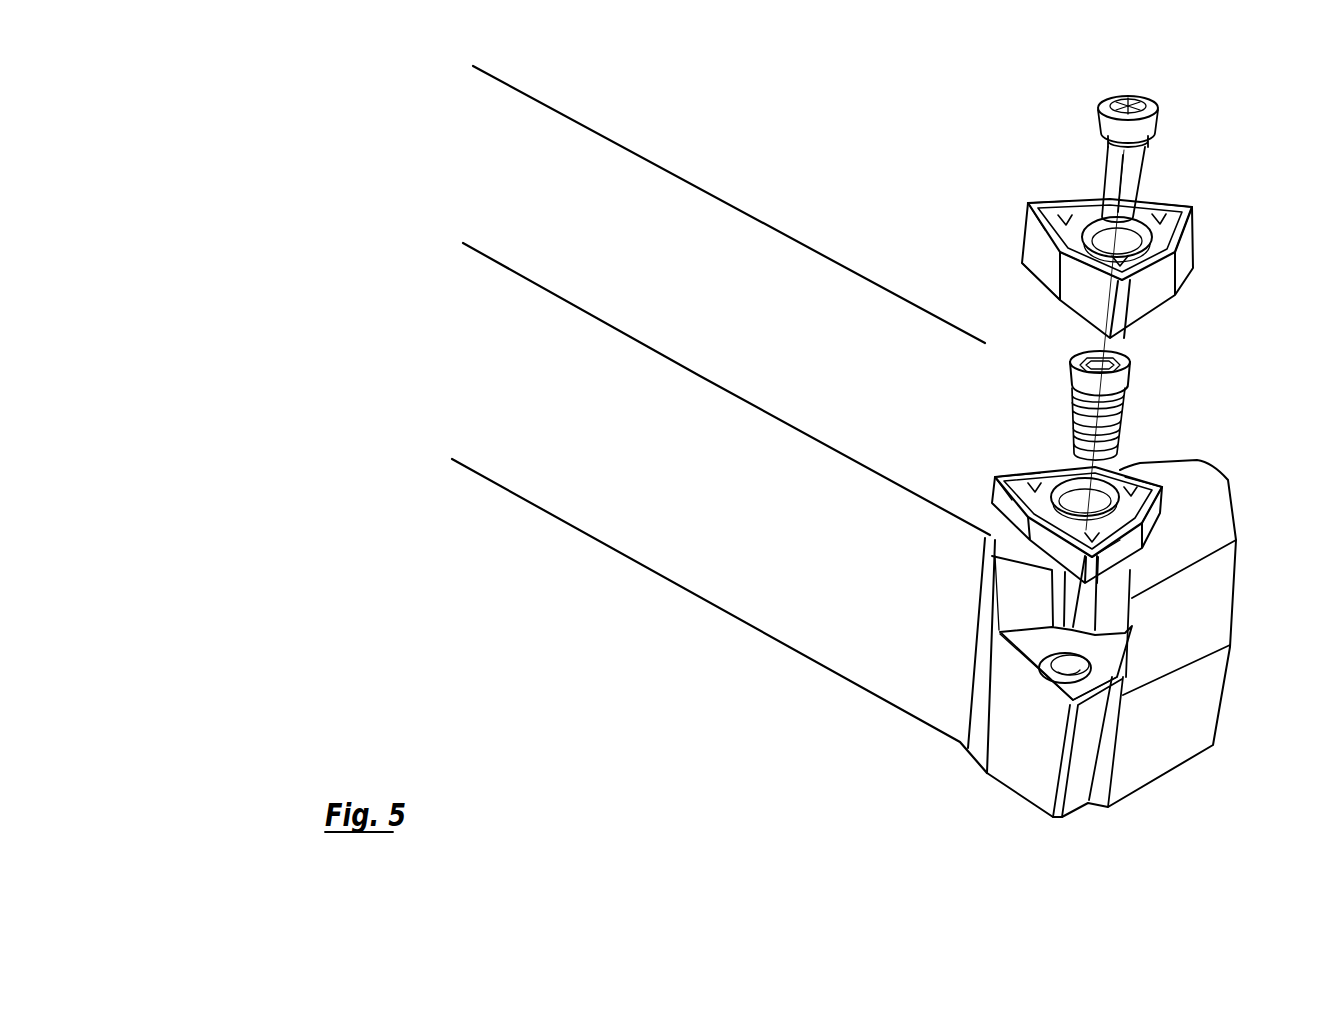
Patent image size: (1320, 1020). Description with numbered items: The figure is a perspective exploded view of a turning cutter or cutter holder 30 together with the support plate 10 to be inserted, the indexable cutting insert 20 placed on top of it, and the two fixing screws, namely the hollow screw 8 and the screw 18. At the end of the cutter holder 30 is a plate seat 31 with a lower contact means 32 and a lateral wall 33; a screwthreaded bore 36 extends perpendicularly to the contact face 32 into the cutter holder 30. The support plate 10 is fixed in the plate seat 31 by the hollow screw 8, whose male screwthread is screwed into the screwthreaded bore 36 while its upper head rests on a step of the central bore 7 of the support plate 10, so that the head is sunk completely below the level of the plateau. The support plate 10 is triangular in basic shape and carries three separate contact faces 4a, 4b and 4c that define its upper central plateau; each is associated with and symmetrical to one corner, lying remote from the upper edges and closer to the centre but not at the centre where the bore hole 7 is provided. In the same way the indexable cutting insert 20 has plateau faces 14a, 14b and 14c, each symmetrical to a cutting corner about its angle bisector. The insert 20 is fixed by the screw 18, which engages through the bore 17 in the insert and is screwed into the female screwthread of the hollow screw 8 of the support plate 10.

The cutter holder 30 is at (853, 259).
The plate seat 31 is at (1110, 607).
The lower contact means 32 is at (1028, 646).
The side wall of the seat 33 is at (1043, 608).
The screwthreaded bore 36 is at (1087, 667).
The support plate 10 is at (1148, 456).
The central bore 7 is at (1113, 470).
The contact face 4a is at (1036, 470).
The contact face 4b is at (1143, 517).
The contact face 4c is at (1127, 467).
The hollow screw 8 is at (1117, 398).
The second cutting insert 20 is at (1133, 226).
The bore 17 is at (1100, 202).
The plateau face 14a is at (1062, 194).
The plateau face 14b is at (1063, 267).
The plateau face 14c is at (1177, 208).
The screw 18 is at (1138, 157).